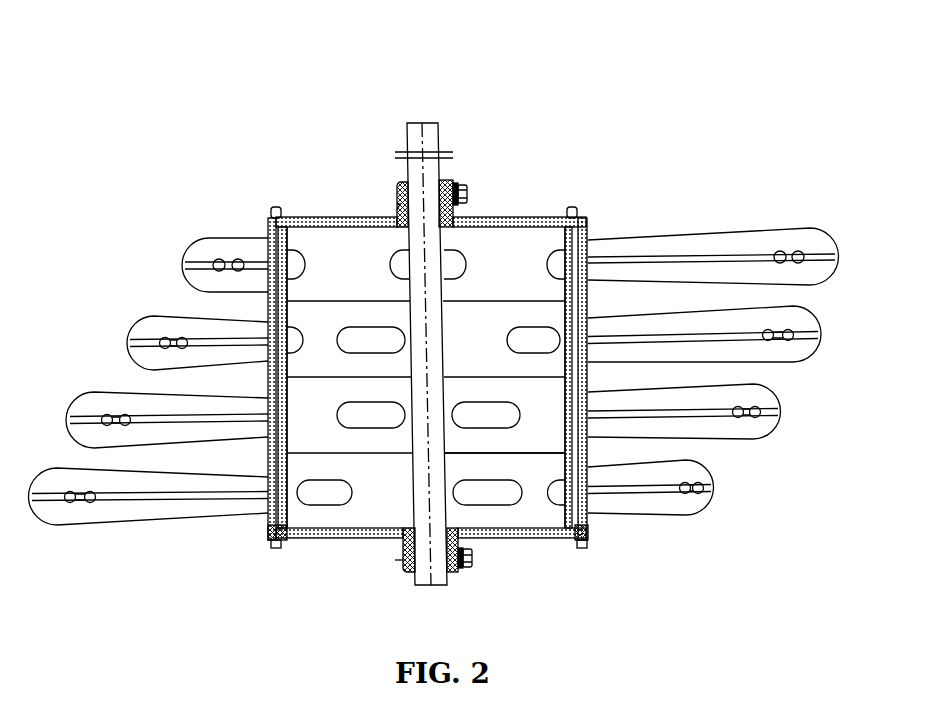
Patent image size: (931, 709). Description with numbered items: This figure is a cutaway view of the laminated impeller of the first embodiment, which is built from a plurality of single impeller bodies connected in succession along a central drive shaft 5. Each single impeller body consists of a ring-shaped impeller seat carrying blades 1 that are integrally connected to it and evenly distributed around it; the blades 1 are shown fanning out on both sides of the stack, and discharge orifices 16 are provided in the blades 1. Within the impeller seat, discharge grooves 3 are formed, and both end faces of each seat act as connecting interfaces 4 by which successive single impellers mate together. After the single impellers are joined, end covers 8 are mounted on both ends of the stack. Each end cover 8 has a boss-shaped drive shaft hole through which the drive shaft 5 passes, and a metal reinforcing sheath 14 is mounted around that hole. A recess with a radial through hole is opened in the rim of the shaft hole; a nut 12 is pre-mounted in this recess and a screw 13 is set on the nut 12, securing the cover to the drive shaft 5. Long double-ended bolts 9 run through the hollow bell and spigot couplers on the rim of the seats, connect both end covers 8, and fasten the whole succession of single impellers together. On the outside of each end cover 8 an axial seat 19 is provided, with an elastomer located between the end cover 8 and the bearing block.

The blade 1 is at (163, 482).
The discharge groove 3 is at (505, 493).
The connecting interface 4 is at (545, 452).
The drive shaft 5 is at (420, 490).
The end cover 8 is at (540, 216).
The long double-ended bolt 9 is at (270, 208).
The nut 12 is at (447, 182).
The screw 13 is at (465, 187).
The reinforcing sheath 14 is at (397, 182).
The discharge orifice 16 is at (182, 342).
The axial seat 19 is at (397, 207).